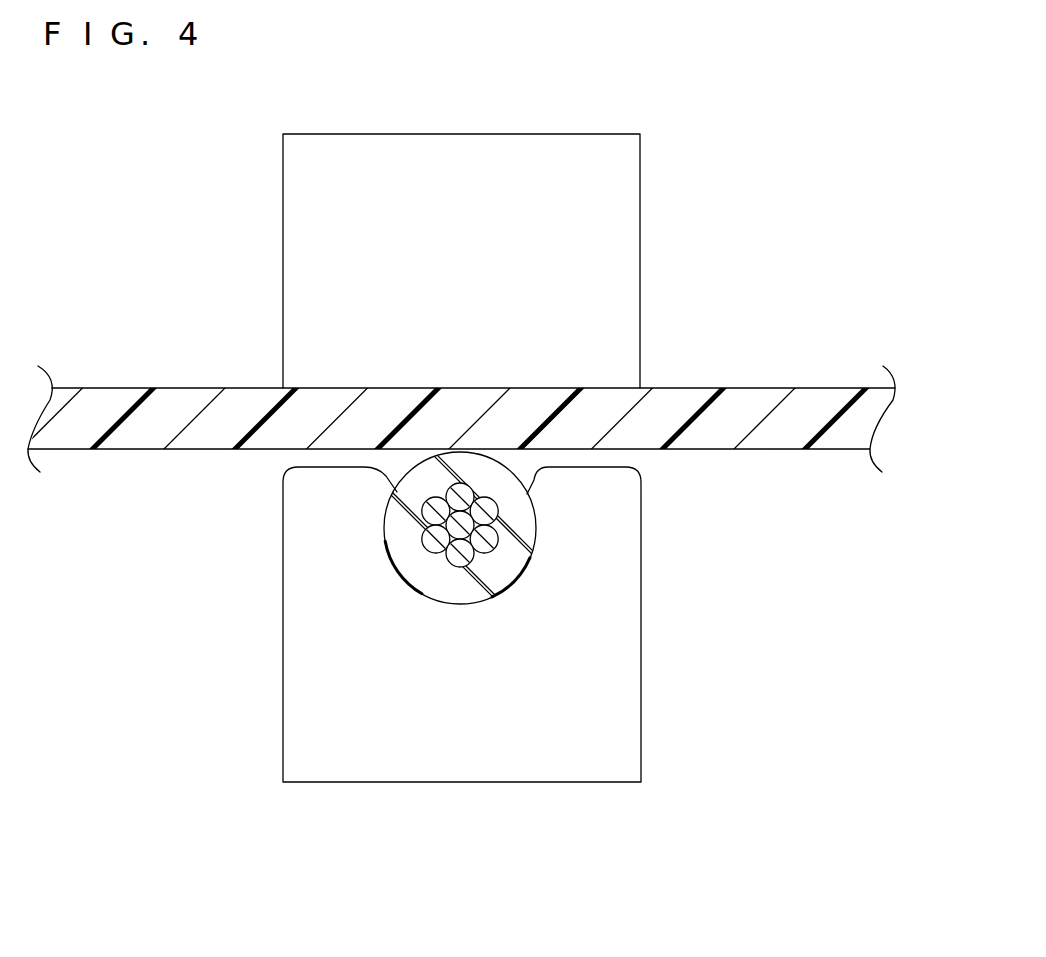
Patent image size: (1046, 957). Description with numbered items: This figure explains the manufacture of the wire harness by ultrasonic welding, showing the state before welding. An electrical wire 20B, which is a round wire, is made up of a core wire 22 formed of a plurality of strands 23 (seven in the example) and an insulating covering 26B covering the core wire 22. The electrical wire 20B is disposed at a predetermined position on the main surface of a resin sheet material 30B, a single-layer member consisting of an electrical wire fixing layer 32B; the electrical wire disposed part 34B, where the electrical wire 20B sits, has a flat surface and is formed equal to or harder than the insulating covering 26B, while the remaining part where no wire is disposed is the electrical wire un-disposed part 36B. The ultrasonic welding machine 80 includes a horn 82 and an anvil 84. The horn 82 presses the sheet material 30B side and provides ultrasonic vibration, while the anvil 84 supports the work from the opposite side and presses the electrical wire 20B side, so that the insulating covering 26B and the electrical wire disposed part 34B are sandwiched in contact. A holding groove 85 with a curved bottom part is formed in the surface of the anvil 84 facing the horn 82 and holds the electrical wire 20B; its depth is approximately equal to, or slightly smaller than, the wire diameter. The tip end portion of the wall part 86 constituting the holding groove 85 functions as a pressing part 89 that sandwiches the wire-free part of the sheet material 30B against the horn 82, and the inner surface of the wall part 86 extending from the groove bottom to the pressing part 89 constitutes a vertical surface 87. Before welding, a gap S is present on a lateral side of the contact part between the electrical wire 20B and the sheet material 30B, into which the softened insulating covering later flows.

The electrical wire 20B is at (593, 571).
The core wire 22 is at (580, 566).
The strand 23 is at (497, 547).
The insulating covering 26B is at (447, 580).
The sheet material 30B is at (454, 414).
The electrical wire fixing layer 32B is at (802, 442).
The electrical wire disposed part 34B is at (465, 398).
The electrical wire un-disposed part 36B is at (123, 407).
The ultrasonic welding machine 80 is at (501, 458).
The horn 82 is at (622, 258).
The anvil 84 is at (623, 512).
The holding groove 85 is at (541, 502).
The wall part 86 is at (297, 592).
The vertical surface 87 is at (383, 502).
The pressing part 89 is at (313, 464).
The gap S is at (521, 467).